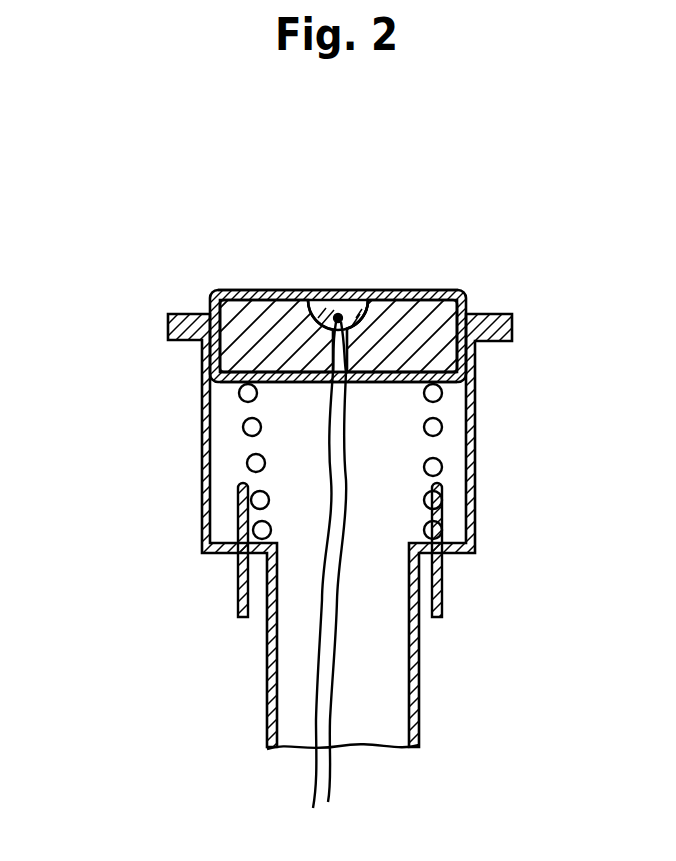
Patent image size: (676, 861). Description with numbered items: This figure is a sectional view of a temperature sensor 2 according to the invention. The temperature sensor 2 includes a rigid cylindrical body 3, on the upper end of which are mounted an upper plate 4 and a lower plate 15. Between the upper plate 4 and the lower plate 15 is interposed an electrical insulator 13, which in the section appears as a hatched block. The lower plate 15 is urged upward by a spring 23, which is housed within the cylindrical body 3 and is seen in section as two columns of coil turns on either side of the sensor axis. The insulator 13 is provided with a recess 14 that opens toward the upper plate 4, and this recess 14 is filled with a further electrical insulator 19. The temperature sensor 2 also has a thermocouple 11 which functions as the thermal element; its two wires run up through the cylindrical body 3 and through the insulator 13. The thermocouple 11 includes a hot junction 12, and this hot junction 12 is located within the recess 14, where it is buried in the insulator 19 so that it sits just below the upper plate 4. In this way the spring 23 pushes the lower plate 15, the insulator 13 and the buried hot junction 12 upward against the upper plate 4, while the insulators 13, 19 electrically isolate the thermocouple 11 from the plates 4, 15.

The temperature sensor 2 is at (478, 292).
The rigid cylindrical body 3 is at (475, 420).
The upper plate 4 is at (440, 290).
The thermocouple 11 is at (333, 790).
The hot junction 12 is at (339, 314).
The electrical insulator 13 is at (245, 312).
The recess 14 is at (364, 297).
The lower plate 15 is at (253, 385).
The electrical insulator 19 is at (318, 317).
The spring 23 is at (442, 467).